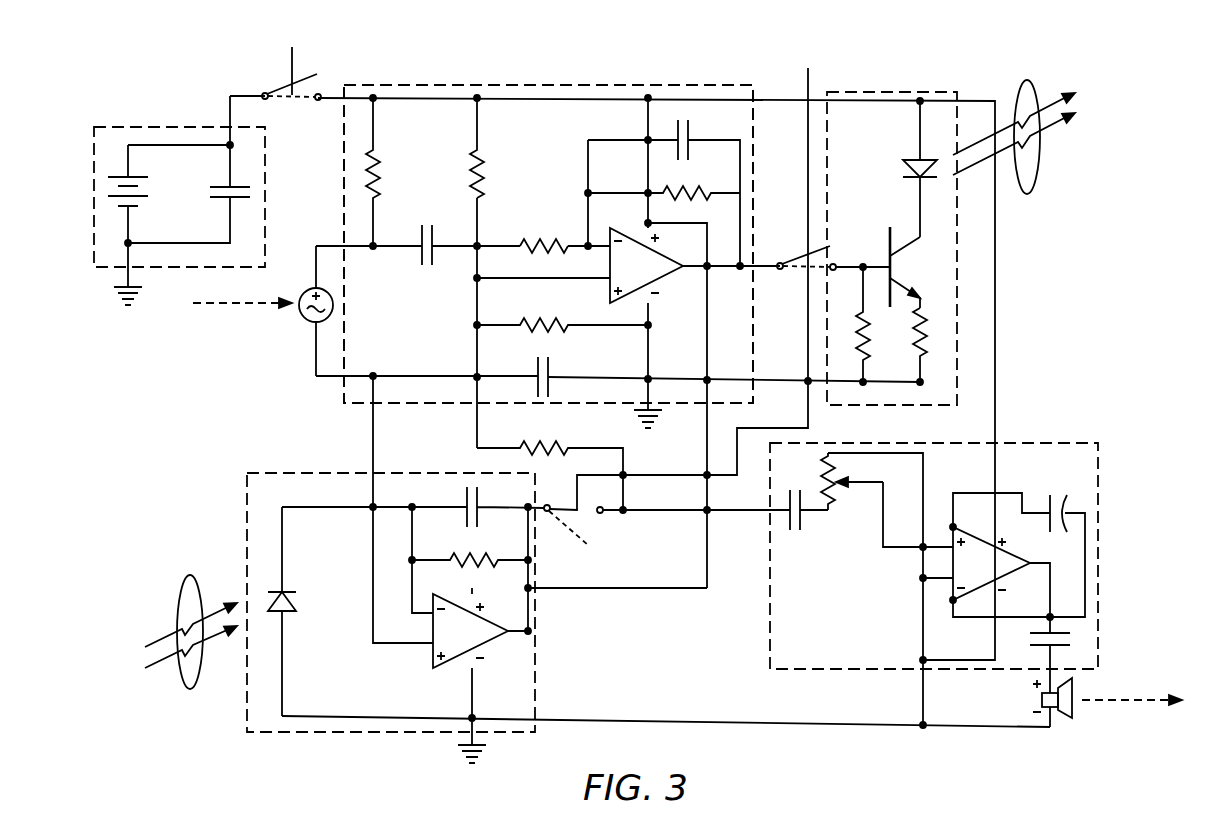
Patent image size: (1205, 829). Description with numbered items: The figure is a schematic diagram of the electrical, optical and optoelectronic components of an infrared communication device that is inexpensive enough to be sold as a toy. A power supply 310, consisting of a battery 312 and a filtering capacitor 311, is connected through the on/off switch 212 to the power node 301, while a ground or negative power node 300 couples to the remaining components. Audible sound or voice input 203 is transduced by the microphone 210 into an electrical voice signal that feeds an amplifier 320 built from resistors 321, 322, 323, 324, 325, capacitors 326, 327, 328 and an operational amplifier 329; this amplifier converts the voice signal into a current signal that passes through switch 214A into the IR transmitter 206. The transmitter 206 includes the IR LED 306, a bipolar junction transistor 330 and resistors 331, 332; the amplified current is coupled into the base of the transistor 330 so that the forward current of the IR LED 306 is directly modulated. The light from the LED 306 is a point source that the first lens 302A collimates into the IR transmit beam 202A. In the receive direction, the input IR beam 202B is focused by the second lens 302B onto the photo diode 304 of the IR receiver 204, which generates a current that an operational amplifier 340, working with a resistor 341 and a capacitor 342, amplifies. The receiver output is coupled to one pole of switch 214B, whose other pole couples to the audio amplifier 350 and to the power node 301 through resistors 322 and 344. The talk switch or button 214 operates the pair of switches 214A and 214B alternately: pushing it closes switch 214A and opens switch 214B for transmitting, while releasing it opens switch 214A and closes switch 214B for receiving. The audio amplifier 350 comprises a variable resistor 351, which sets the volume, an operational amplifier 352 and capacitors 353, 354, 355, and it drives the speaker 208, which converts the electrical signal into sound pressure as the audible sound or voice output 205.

The ground or negative power node 300 is at (128, 288).
The power node 301 is at (548, 98).
The power supply 310 is at (95, 127).
The filtering capacitor 311 is at (250, 197).
The battery 312 is at (128, 177).
The on/off switch 212 is at (287, 63).
The audible sound/voice input 203 is at (230, 304).
The microphone 210 is at (303, 317).
The amplifier 320 is at (437, 85).
The resistor 321 is at (376, 160).
The resistor 322 is at (481, 160).
The resistor 323 is at (543, 246).
The resistor 324 is at (530, 310).
The resistor 325 is at (710, 190).
The capacitor 326 is at (433, 236).
The capacitor 327 is at (691, 135).
The capacitor 328 is at (550, 370).
The operational amplifier 329 is at (680, 268).
The talk switch or button 214 is at (808, 92).
The electrical switch 214A is at (828, 251).
The electrical switch 214B is at (603, 513).
The IR transmitter 206 is at (957, 92).
The IR light emitting diode 306 is at (905, 165).
The bipolar junction transistor 330 is at (921, 240).
The resistor 331 is at (869, 340).
The resistor 332 is at (926, 340).
The first lens 302A is at (1030, 81).
The IR transmit beam 202A is at (1071, 118).
The IR receiver 204 is at (247, 473).
The IR photo diode 304 is at (292, 612).
The operational amplifier 340 is at (436, 660).
The resistor 341 is at (460, 555).
The capacitor 342 is at (462, 490).
The resistor 344 is at (553, 449).
The second lens 302B is at (192, 575).
The input IR beam 202B is at (153, 646).
The audio amplifier 350 is at (1098, 443).
The variable resistor 351 is at (828, 482).
The operational amplifier 352 is at (1022, 557).
The capacitor 353 is at (801, 528).
The capacitor 354 is at (1055, 495).
The capacitor 355 is at (1072, 640).
The speaker 208 is at (1063, 712).
The audible sound/voice output 205 is at (1123, 700).